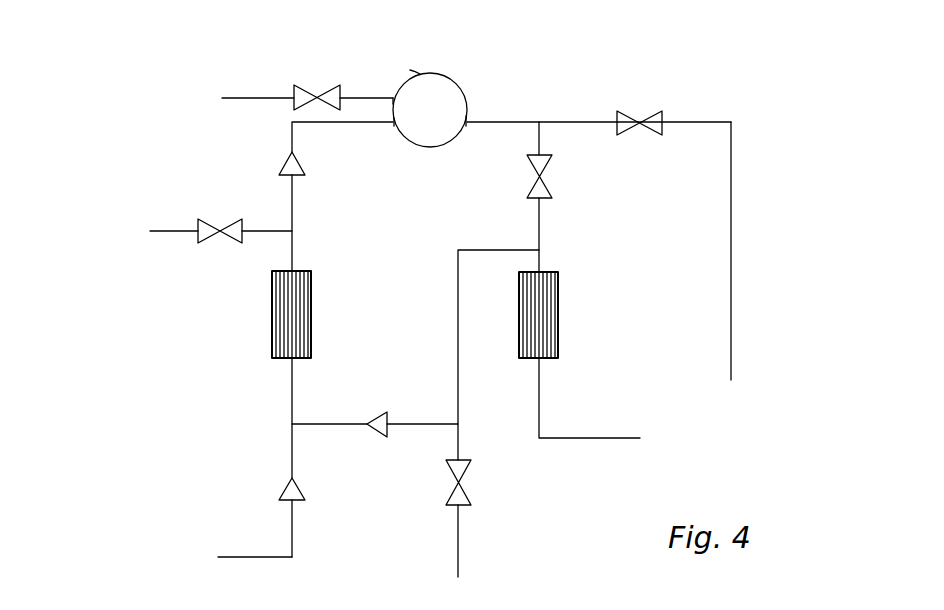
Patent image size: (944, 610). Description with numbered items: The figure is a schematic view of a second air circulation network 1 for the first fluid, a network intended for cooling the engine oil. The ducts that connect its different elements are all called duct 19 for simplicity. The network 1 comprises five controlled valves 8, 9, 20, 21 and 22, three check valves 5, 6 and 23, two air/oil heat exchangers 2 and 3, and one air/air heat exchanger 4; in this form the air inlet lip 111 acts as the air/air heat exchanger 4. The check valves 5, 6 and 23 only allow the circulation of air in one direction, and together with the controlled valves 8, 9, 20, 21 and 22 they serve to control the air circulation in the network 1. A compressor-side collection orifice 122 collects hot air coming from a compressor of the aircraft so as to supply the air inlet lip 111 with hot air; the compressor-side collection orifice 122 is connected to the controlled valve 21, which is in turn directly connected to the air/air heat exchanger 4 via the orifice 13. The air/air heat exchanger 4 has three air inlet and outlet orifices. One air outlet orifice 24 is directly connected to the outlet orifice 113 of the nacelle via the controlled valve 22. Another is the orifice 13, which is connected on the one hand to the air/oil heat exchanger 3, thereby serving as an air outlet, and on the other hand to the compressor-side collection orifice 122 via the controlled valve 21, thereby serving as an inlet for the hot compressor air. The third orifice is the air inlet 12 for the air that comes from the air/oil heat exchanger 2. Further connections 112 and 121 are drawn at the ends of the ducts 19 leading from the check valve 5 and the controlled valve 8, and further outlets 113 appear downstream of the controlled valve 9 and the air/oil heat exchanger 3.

The air circulation network 1 is at (722, 48).
The air/oil heat exchanger 2 is at (270, 323).
The air/oil heat exchanger 3 is at (560, 312).
The air/air heat exchanger 4 is at (457, 70).
The check valve 5 is at (287, 486).
The check valve 6 is at (375, 412).
The controlled valve 8 is at (473, 488).
The controlled valve 9 is at (215, 216).
The air inlet 12 is at (397, 125).
The orifice 13 is at (467, 118).
The duct 19 is at (541, 135).
The controlled valve 20 is at (548, 178).
The controlled valve 21 is at (648, 108).
The controlled valve 22 is at (310, 84).
The check valve 23 is at (288, 157).
The air outlet orifice 24 is at (397, 95).
The air inlet lip 111 is at (414, 72).
The line 112 is at (218, 557).
The outlet orifice 113 is at (222, 98).
The line 121 is at (458, 577).
The compressor-side collection orifice 122 is at (731, 380).